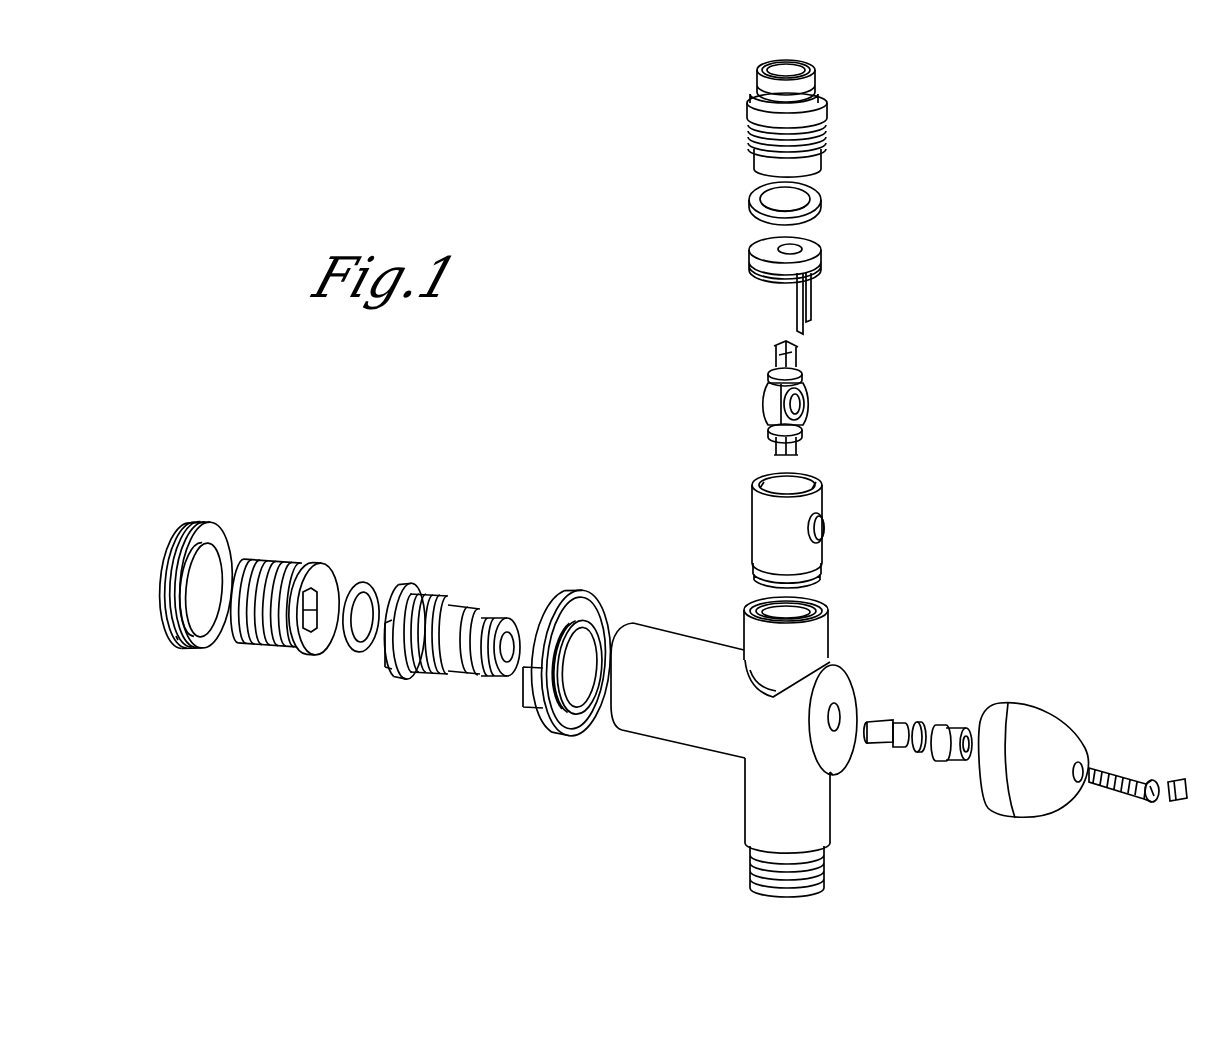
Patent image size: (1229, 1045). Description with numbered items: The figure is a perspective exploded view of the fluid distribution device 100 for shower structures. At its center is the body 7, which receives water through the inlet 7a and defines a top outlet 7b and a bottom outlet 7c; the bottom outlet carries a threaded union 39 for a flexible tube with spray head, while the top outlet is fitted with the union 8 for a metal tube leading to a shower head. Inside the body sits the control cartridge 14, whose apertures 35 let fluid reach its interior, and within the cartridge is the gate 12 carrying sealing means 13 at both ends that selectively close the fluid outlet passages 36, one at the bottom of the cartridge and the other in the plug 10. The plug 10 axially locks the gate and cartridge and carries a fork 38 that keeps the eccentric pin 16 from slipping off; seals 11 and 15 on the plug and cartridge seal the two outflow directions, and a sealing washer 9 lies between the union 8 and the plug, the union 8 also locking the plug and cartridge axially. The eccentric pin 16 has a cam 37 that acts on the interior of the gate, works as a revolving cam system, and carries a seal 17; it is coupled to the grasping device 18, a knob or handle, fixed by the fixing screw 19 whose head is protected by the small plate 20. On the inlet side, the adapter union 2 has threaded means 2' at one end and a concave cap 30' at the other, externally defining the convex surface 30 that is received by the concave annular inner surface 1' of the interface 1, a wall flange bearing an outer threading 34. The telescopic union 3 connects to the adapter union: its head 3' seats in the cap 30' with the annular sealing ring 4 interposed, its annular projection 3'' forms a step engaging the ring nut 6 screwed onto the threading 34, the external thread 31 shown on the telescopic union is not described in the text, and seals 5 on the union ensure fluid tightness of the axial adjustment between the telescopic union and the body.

The interface 1 is at (179, 588).
The concave annular inner surface 1' is at (201, 630).
The outer threading 34 is at (176, 640).
The adapter union 2 is at (308, 630).
The threaded means 2' is at (293, 542).
The convex surface 30 is at (337, 582).
The concave cap 30' is at (321, 706).
The annular sealing ring 4 is at (355, 648).
The telescopic union 3 is at (451, 613).
The head 3' is at (395, 673).
The annular projection 3'' is at (416, 584).
The external thread of fitting 31 is at (437, 592).
The seals 5 is at (467, 664).
The ring nut 6 is at (567, 598).
The body 7 is at (721, 748).
The inlet 7a is at (668, 721).
The top outlet 7b is at (760, 645).
The bottom outlet 7c is at (755, 825).
The threaded union 39 is at (828, 890).
The union 8 is at (797, 115).
The sealing washer 9 is at (819, 201).
The plug 10 is at (752, 243).
The seal 11 is at (755, 266).
The fluid outlet passages 36 is at (792, 250).
The fork 38 is at (811, 302).
The gate 12 is at (778, 401).
The sealing means 13 is at (800, 434).
The control cartridge 14 is at (814, 500).
The apertures 35 is at (822, 527).
The seal 15 is at (820, 569).
The eccentric pin 16 is at (895, 754).
The seal 17 is at (945, 728).
The cam 37 is at (897, 742).
The grasping device 18 is at (1037, 712).
The fixing screw 19 is at (1120, 775).
The small plate 20 is at (1180, 784).
The fluid distribution device 100 is at (947, 455).